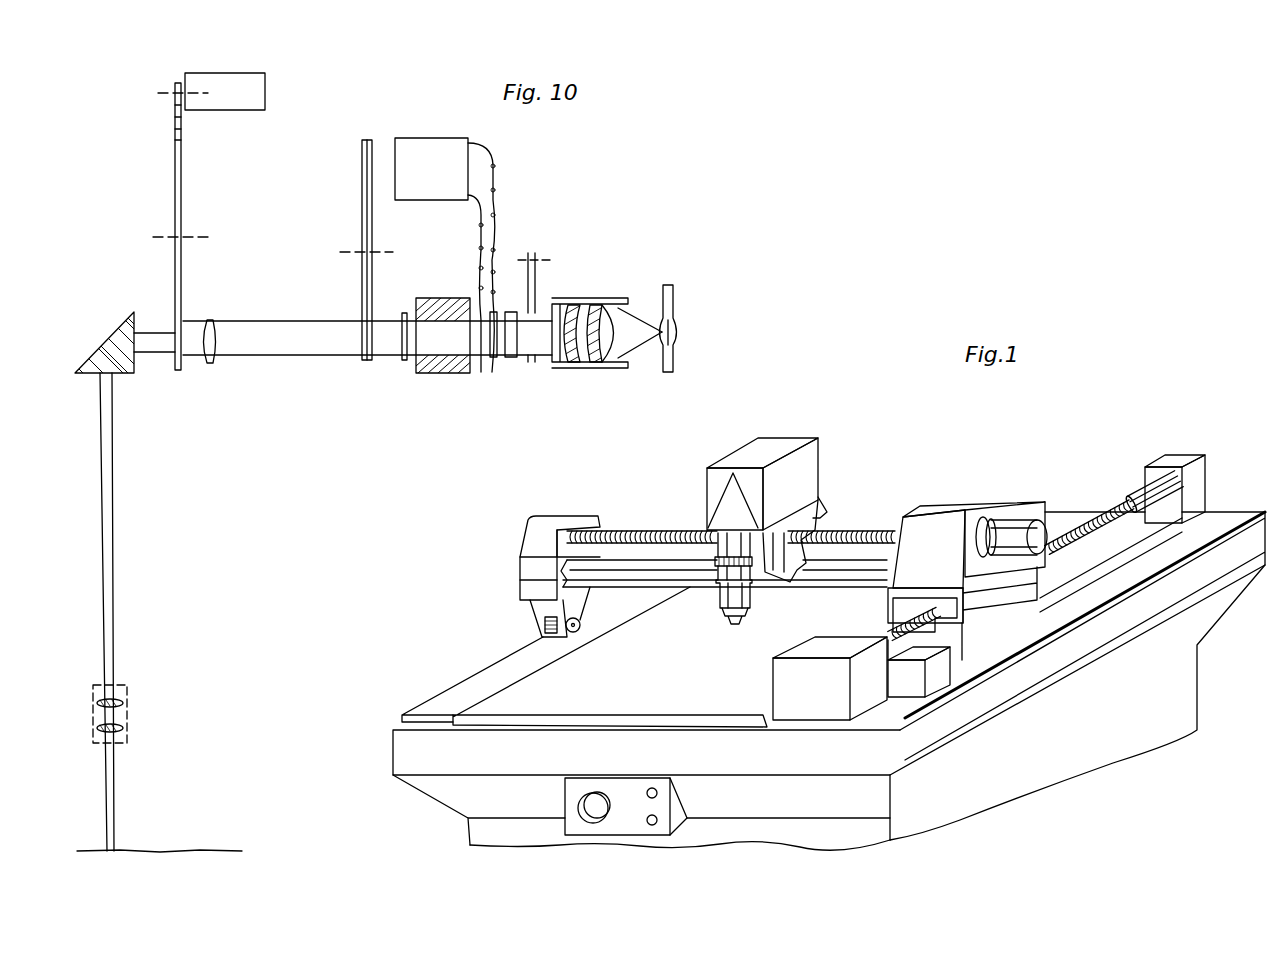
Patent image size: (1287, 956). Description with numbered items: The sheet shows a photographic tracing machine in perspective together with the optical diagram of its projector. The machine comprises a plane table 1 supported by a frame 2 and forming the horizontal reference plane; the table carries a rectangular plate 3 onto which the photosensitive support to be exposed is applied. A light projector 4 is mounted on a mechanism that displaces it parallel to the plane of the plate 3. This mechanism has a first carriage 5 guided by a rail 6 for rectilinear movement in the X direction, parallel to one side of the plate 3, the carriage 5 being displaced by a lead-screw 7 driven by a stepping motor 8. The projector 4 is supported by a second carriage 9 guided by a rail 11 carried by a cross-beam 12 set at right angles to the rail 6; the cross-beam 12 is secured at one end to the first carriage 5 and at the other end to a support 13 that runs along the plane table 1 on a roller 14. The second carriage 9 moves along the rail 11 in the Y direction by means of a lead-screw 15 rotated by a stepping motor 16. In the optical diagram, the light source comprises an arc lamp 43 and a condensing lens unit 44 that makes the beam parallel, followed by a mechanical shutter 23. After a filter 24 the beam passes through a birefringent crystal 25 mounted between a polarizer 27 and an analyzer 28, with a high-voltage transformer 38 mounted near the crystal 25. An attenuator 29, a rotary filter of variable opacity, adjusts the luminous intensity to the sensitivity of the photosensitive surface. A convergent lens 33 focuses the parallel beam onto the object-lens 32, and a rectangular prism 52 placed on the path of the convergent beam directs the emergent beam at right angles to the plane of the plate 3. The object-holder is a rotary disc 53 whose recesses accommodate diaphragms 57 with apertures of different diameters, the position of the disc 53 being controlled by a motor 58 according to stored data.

In FIG. 1, the plane table 1 is at (438, 702).
In FIG. 1, the frame 2 is at (393, 738).
In FIG. 10, the rectangular plate 3 is at (166, 850).
In FIG. 1, the rectangular plate 3 is at (527, 697).
In FIG. 1, the light projector 4 is at (799, 434).
In FIG. 1, the first carriage 5 is at (982, 497).
In FIG. 1, the rail 6 is at (1098, 544).
In FIG. 1, the lead-screw 7 is at (1117, 503).
In FIG. 1, the stepping motor 8 is at (817, 650).
In FIG. 1, the second carriage 9 is at (814, 517).
In FIG. 1, the rail 11 is at (663, 553).
In FIG. 1, the cross-beam 12 is at (703, 578).
In FIG. 1, the support 13 is at (537, 543).
In FIG. 1, the roller 14 is at (580, 627).
In FIG. 1, the lead-screw 15 is at (636, 530).
In FIG. 1, the stepping motor 16 is at (1040, 533).
In FIG. 10, the mechanical shutter 23 is at (536, 281).
In FIG. 10, the filter 24 is at (513, 357).
In FIG. 10, the birefringent crystal 25 is at (443, 345).
In FIG. 10, the polarizer 27 is at (494, 357).
In FIG. 10, the analyzer 28 is at (405, 360).
In FIG. 10, the attenuator 29 is at (362, 190).
In FIG. 10, the object-lens 32 is at (130, 707).
In FIG. 10, the convergent lens 33 is at (213, 318).
In FIG. 10, the high-voltage transformer 38 is at (423, 150).
In FIG. 10, the arc lamp 43 is at (673, 320).
In FIG. 10, the condensing lens unit 44 is at (600, 291).
In FIG. 10, the rectangular prism 52 is at (131, 376).
In FIG. 10, the rotary disc 53 is at (181, 203).
In FIG. 10, the diaphragms 57 is at (179, 118).
In FIG. 10, the motor 58 is at (268, 93).